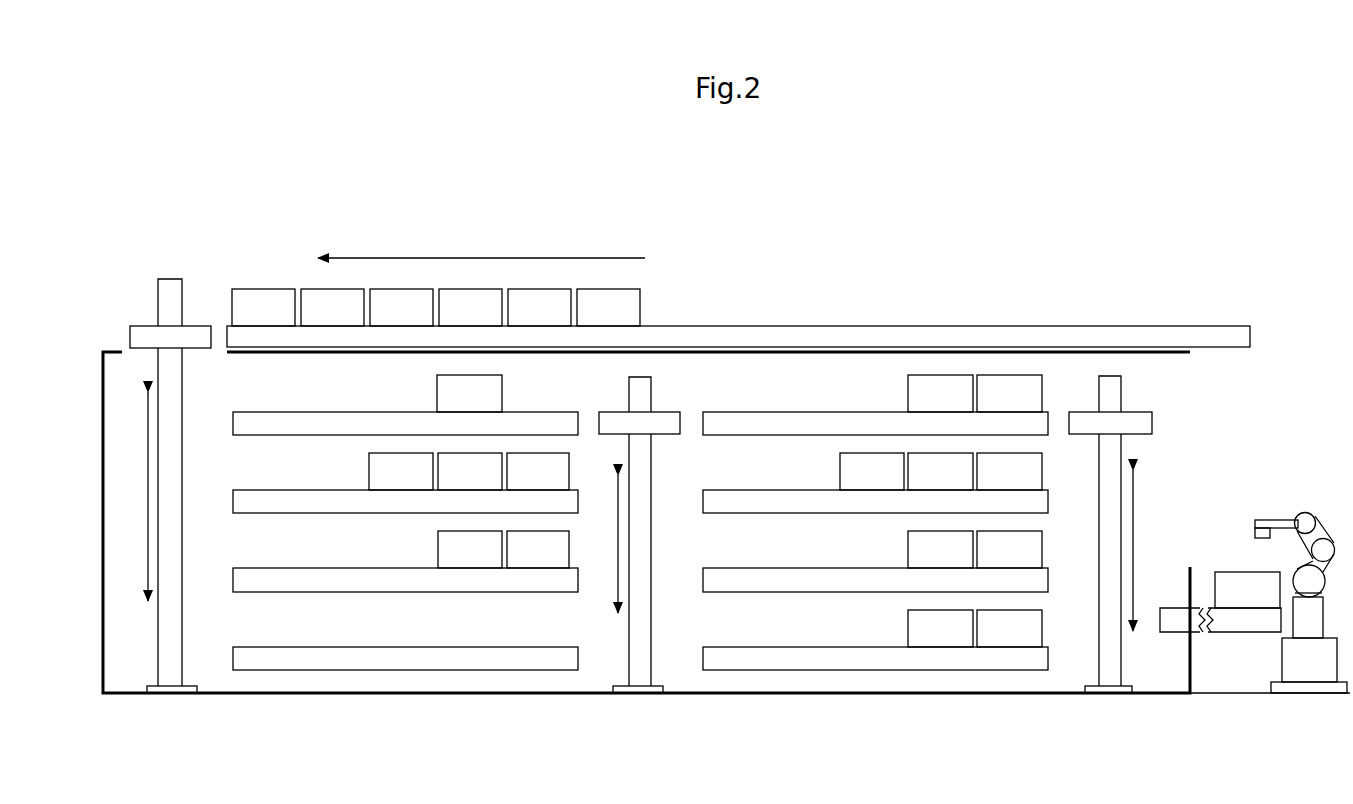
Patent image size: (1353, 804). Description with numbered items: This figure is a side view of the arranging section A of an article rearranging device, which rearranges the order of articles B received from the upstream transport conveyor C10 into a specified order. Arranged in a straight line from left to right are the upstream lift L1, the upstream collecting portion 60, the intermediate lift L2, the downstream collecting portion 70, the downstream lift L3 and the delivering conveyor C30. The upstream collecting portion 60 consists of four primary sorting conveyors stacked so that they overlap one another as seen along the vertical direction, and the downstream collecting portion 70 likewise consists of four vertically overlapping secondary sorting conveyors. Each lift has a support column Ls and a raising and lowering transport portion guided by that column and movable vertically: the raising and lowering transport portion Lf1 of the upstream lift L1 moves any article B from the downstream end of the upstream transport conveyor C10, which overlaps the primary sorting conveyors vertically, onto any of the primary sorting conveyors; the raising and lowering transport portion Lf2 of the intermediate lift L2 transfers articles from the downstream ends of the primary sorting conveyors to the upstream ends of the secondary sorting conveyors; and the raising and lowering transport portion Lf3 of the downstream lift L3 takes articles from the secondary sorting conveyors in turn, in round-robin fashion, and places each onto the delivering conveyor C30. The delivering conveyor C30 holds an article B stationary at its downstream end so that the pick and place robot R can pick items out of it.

The arranging section A is at (104, 385).
The article B is at (620, 296).
The upstream transport conveyor C10 is at (1116, 324).
The delivering conveyor C30 is at (1243, 636).
The raising and lowering transport portion Lf1 is at (191, 326).
The raising and lowering transport portion Lf2 is at (618, 412).
The raising and lowering transport portion Lf3 is at (1134, 412).
The support column Ls is at (182, 655).
The upstream lift L1 is at (151, 648).
The intermediate lift L2 is at (620, 655).
The downstream lift L3 is at (1088, 672).
The upstream collecting portion 60 is at (383, 566).
The downstream collecting portion 70 is at (858, 570).
The pick and place robot R is at (1289, 518).